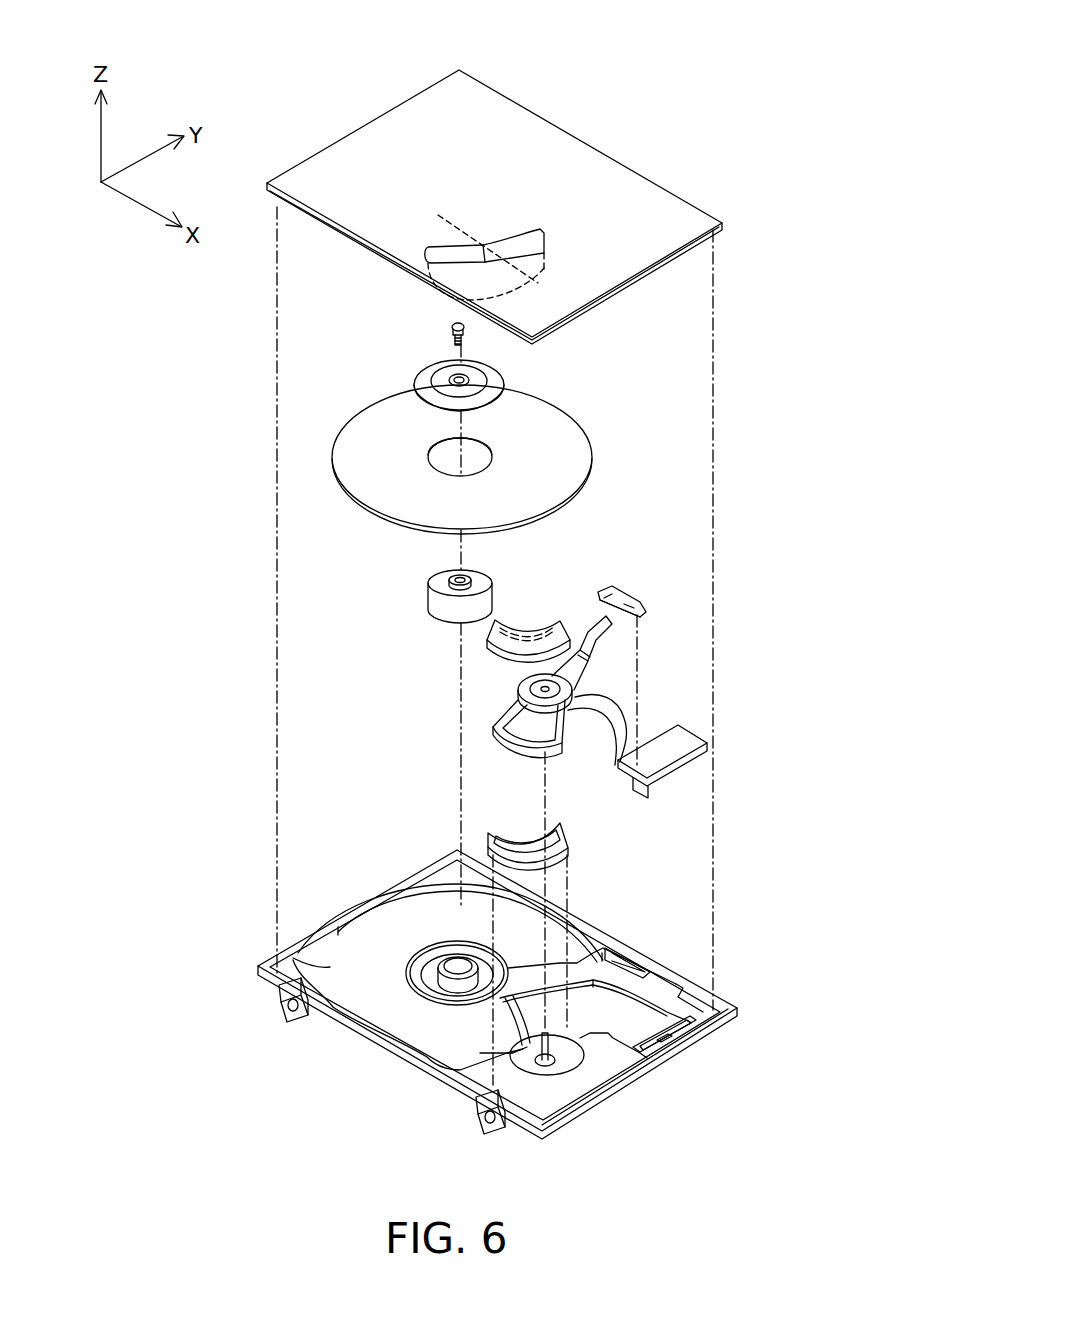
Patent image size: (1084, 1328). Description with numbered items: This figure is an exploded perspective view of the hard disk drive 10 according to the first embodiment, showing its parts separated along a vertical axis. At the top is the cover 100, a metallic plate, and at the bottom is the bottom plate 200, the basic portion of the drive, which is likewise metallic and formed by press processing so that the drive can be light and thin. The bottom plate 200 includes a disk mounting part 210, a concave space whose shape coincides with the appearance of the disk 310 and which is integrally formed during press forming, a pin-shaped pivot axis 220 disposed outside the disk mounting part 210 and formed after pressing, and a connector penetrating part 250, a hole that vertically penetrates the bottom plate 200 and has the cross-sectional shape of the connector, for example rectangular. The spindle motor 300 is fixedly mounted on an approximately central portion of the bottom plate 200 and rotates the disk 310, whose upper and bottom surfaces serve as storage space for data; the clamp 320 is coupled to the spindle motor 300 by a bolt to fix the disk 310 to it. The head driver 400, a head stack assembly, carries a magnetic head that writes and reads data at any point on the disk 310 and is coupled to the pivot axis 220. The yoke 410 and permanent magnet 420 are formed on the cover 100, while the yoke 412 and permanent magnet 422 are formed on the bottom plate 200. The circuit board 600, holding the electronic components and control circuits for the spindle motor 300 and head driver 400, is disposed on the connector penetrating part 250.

The hard disk drive 10 is at (660, 115).
The cover 100 is at (660, 207).
The bottom plate 200 is at (490, 1020).
The disk mounting part 210 is at (330, 968).
The pivot axis 220 is at (548, 1065).
The connector penetrating part 250 is at (667, 1033).
The spindle motor 300 is at (412, 603).
The disk 310 is at (570, 430).
The clamp 320 is at (493, 383).
The head driver 400 is at (589, 667).
The yoke 410 is at (507, 643).
The yoke 412 is at (479, 806).
The permanent magnet 420 is at (528, 628).
The permanent magnet 422 is at (490, 820).
The circuit board 600 is at (697, 760).